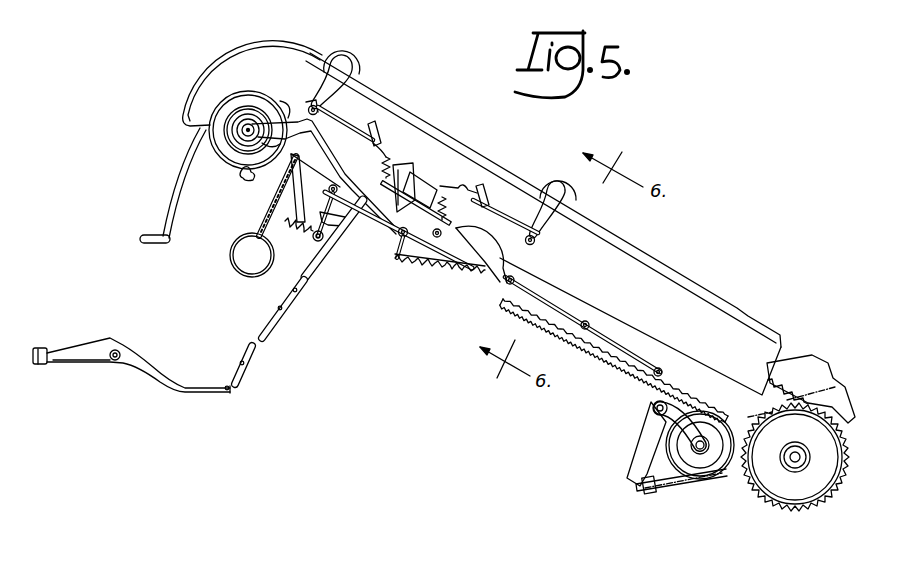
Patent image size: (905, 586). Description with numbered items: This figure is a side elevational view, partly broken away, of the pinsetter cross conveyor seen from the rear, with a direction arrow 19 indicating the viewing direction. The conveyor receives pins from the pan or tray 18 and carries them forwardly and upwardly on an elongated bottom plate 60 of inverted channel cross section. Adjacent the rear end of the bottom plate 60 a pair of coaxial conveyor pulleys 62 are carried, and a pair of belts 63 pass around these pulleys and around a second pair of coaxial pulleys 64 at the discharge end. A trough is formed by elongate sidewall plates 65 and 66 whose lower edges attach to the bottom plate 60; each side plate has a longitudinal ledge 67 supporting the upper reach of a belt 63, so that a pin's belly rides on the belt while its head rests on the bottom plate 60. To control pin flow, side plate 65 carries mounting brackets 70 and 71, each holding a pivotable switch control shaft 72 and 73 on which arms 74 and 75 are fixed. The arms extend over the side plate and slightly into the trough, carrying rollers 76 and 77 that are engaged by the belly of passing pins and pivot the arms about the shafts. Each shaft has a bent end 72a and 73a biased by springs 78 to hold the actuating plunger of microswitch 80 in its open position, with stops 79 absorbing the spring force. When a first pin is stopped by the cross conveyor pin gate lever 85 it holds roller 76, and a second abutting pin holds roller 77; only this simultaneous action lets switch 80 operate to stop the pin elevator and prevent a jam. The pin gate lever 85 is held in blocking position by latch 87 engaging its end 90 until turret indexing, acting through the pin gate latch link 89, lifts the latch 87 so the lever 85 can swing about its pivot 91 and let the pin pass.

The tray 18 is at (808, 355).
The direction of travel 19 is at (730, 250).
The bottom plate 60 is at (436, 268).
The conveyor pulleys 62 is at (787, 483).
The belts 63 is at (824, 505).
The pulleys 64 is at (218, 118).
The sidewall plate 65 is at (647, 268).
The sidewall plate 66 is at (500, 283).
The longitudinal ledge 67 is at (633, 331).
The mounting bracket 70 is at (352, 115).
The mounting bracket 71 is at (509, 192).
The pivotable switch control shaft 72 is at (307, 103).
The bent end 72a is at (413, 169).
The pivotable switch control shaft 73 is at (541, 239).
The bent end 73a is at (468, 187).
The arm 74 is at (325, 66).
The arm 75 is at (572, 197).
The roller 76 is at (348, 48).
The roller 77 is at (558, 181).
The springs 78 is at (390, 161).
The stops 79 is at (381, 240).
The microswitch 80 is at (440, 180).
The cross conveyor pin gate lever 85 is at (307, 168).
The latch 87 is at (360, 228).
The pin gate latch link 89 is at (263, 323).
The end of pin gate lever 90 is at (314, 241).
The pivot 91 is at (329, 191).